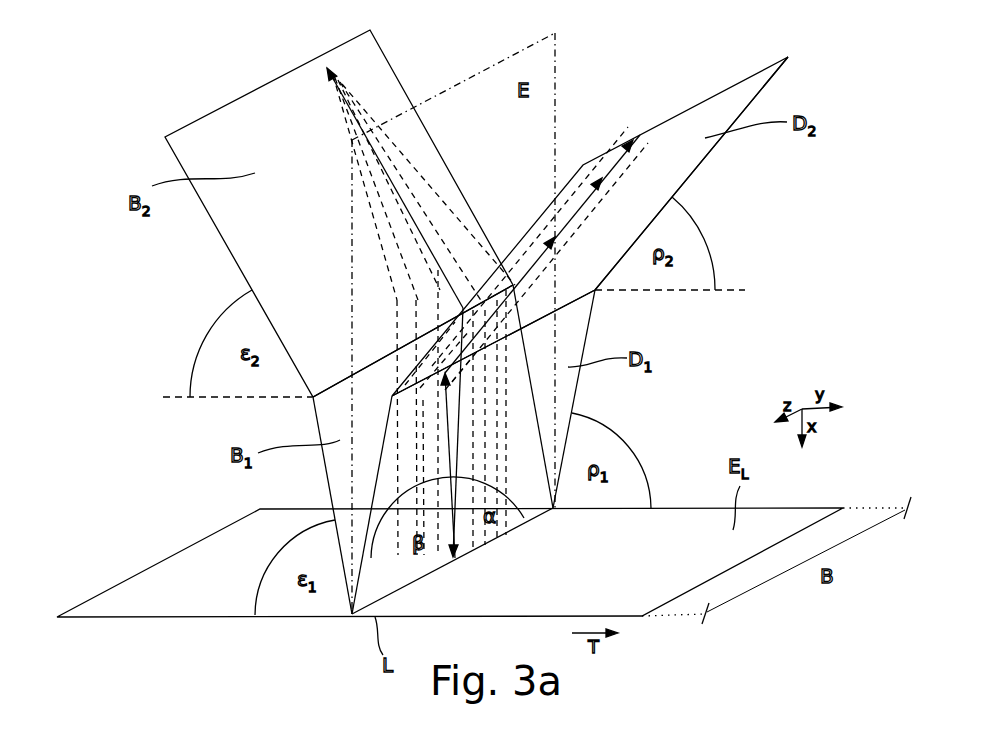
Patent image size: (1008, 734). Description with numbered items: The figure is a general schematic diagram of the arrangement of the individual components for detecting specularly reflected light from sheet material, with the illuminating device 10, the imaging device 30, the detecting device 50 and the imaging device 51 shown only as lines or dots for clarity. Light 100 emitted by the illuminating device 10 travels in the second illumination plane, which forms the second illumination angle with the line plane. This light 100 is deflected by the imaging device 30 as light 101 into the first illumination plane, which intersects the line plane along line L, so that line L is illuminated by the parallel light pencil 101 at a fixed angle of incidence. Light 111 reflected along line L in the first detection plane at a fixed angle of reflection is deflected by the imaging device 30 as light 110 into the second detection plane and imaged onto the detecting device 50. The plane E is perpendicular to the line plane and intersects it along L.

The illuminating device 10 is at (197, 119).
The imaging device 30 is at (343, 380).
The detecting device 50 is at (683, 110).
The imaging device 51 is at (575, 208).
The light 100 is at (342, 108).
The light 101 is at (462, 413).
The light 110 is at (615, 150).
The reflected light 111 is at (448, 467).